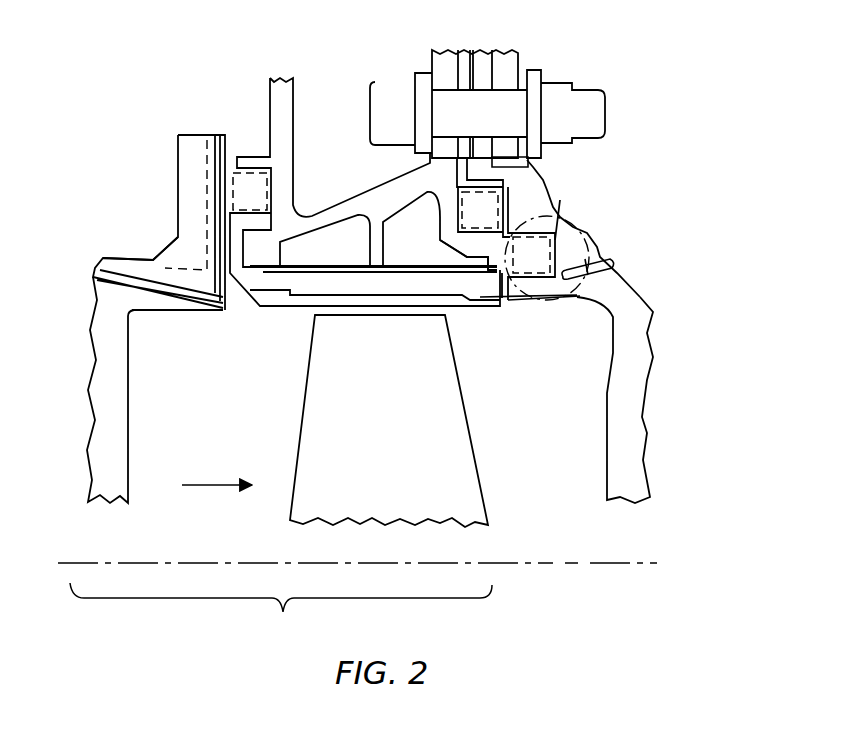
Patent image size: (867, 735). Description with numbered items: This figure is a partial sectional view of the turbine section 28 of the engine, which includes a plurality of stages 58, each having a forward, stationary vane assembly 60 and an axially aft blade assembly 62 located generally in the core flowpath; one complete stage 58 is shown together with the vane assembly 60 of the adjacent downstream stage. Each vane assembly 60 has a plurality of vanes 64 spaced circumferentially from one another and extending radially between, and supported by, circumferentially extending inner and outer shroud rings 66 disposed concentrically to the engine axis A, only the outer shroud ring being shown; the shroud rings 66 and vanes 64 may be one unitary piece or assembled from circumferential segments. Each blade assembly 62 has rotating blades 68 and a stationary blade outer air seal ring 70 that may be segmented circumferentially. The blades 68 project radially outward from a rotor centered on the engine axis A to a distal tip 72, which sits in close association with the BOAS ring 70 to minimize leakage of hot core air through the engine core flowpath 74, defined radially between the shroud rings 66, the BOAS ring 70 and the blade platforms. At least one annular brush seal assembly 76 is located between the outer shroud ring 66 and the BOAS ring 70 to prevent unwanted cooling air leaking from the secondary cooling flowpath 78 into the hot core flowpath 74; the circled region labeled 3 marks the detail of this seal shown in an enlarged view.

The turbine section 28 is at (680, 185).
The stage 58 is at (281, 612).
The vane assembly 60 is at (110, 156).
The blade assembly 62 is at (322, 76).
The vane 64 is at (120, 450).
The shroud ring 66 is at (177, 250).
The blade 68 is at (467, 450).
The blade outer air seal ring 70 is at (475, 293).
The distal tip 72 is at (342, 313).
The engine core flowpath 74 is at (246, 379).
The brush seal assembly 76 is at (251, 171).
The secondary cooling flowpath 78 is at (139, 110).
The detail view circle 3 is at (528, 318).
The engine axis A is at (572, 565).